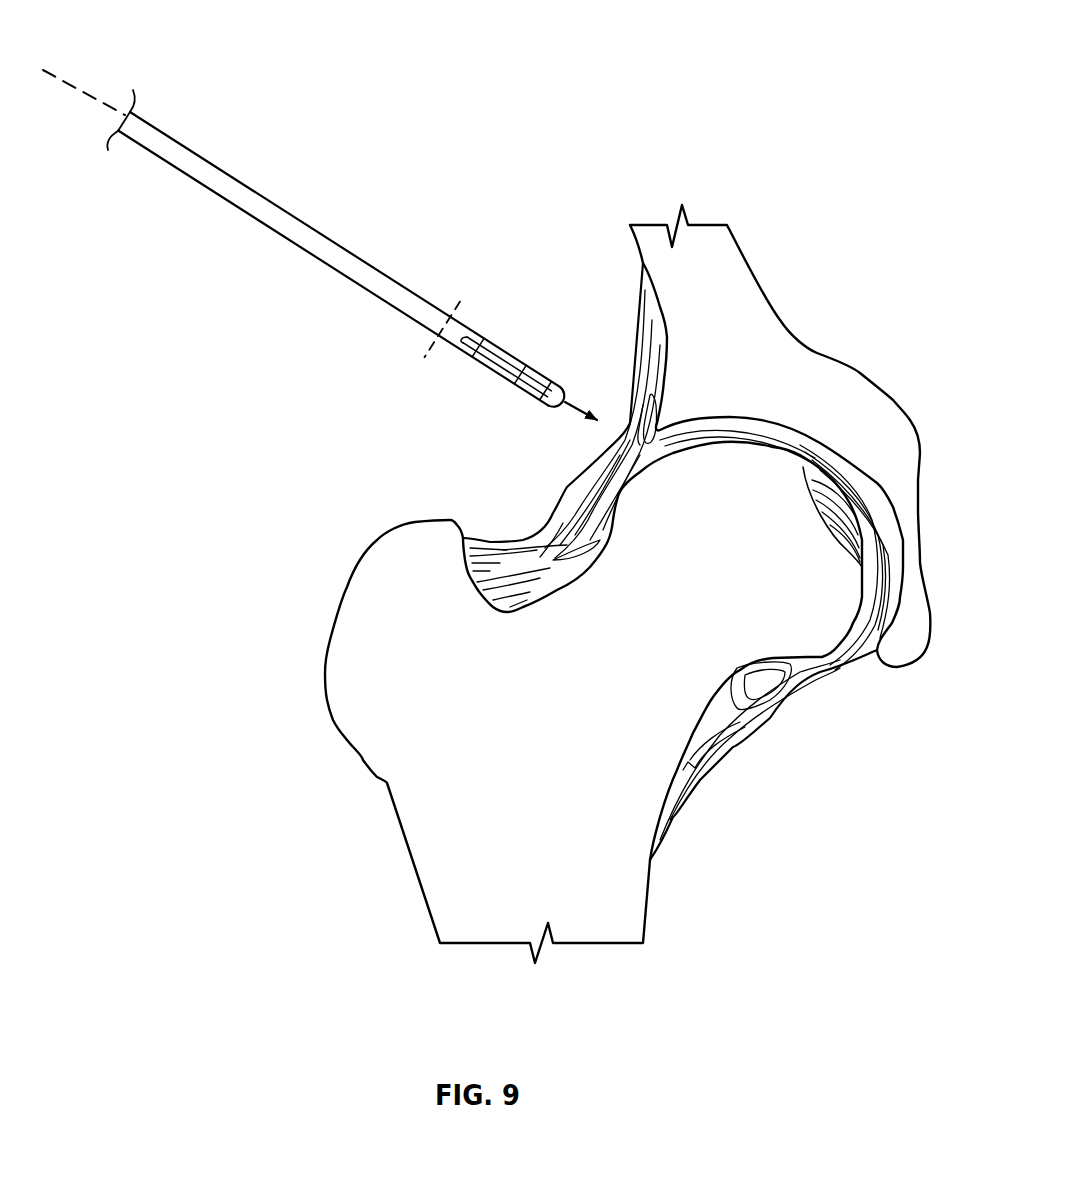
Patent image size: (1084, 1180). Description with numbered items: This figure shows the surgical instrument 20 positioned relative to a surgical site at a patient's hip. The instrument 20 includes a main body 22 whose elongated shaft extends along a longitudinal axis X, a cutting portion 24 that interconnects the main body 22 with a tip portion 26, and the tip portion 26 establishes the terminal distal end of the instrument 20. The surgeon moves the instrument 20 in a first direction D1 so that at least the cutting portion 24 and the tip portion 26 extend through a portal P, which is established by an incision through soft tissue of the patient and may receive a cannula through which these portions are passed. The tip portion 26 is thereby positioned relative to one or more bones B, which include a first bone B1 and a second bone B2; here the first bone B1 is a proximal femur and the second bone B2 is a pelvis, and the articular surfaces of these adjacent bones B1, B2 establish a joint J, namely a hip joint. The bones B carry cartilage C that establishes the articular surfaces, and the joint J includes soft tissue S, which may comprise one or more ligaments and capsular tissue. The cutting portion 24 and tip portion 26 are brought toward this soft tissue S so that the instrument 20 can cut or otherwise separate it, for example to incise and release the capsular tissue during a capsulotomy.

The surgical instrument 20 is at (321, 210).
The main body 22 is at (321, 228).
The cutting portion 24 is at (530, 340).
The tip portion 26 is at (560, 382).
The axis X is at (66, 84).
The portal P is at (432, 352).
The joint J is at (635, 580).
The first direction D1 is at (580, 415).
The soft tissue S is at (560, 480).
The bones B is at (587, 702).
The first bone B1 is at (423, 885).
The second bone B2 is at (807, 358).
The cartilage C is at (830, 483).